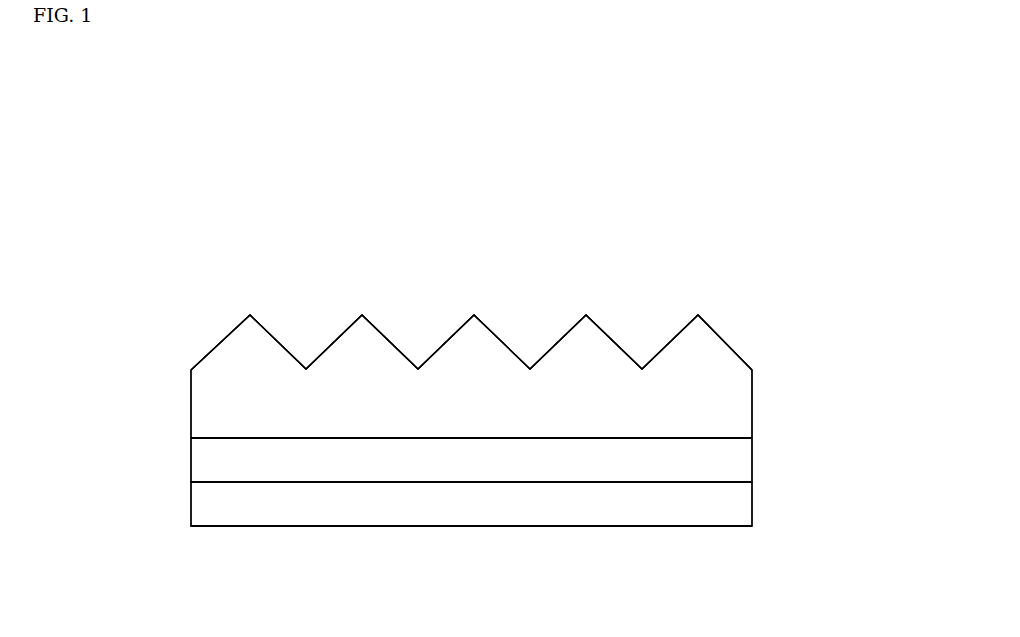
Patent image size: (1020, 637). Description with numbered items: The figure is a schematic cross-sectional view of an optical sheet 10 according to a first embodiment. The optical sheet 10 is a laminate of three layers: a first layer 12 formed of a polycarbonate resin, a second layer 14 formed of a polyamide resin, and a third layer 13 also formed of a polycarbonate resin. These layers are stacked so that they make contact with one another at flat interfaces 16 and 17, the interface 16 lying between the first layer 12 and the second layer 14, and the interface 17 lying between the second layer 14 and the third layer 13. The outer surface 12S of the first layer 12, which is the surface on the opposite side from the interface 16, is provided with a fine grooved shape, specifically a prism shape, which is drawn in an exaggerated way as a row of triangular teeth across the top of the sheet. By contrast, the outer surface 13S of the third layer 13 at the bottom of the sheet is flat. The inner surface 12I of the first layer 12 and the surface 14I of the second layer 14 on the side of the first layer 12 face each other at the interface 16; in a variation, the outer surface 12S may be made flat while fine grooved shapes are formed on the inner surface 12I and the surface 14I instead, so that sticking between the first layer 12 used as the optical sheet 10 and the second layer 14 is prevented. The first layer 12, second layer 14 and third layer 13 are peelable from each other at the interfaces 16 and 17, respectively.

The optical sheet 10 is at (712, 230).
The first layer 12 is at (752, 400).
The outer surface of the first layer 12S is at (500, 342).
The inner surface of the first layer 12I is at (606, 440).
The second layer 14 is at (735, 460).
The surface of the second layer on the side of the first layer 14I is at (652, 437).
The third layer 13 is at (752, 505).
The outer surface of the third layer 13S is at (476, 528).
The interface 16 is at (195, 438).
The interface 17 is at (195, 482).